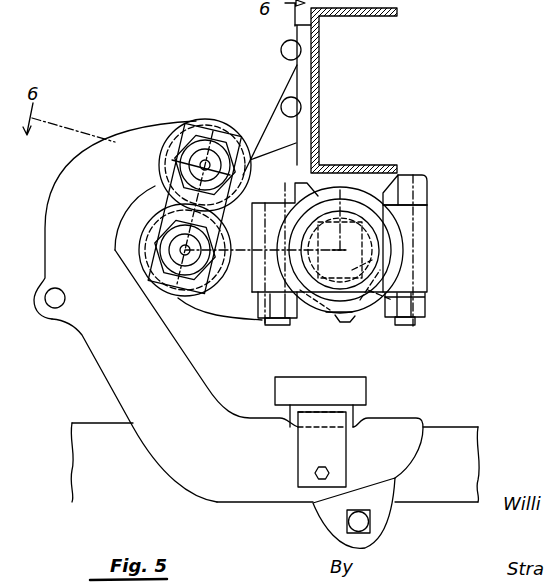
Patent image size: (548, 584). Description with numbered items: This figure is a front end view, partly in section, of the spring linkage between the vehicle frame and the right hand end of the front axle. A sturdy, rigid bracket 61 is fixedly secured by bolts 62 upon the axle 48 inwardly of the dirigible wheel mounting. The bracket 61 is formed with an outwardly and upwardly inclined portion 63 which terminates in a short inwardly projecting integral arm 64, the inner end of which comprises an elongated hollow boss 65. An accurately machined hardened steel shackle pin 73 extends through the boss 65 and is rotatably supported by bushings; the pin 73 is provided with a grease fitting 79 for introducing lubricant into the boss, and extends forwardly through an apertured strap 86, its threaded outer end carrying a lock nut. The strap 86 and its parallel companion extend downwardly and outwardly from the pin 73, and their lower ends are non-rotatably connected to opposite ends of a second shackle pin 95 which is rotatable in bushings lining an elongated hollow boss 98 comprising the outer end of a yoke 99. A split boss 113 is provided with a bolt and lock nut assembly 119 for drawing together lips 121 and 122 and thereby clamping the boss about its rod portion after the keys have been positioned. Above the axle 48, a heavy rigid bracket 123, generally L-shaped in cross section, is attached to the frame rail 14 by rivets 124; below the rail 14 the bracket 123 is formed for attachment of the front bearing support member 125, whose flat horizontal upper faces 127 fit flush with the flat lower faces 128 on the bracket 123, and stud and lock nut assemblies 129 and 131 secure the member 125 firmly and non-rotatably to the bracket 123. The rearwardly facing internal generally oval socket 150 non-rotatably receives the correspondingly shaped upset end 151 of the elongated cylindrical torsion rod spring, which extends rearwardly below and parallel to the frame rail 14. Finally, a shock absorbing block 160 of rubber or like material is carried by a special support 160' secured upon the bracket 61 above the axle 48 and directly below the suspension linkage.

The frame rail 14 is at (320, 83).
The axle 48 is at (478, 440).
The bracket 61 is at (163, 463).
The bolts 62 is at (371, 523).
The outwardly and upwardly inclined portion 63 is at (98, 343).
The arm 64 is at (150, 128).
The hollow boss 65 is at (218, 127).
The shackle pin 73 is at (226, 130).
The grease fitting 79 is at (180, 173).
The strap 86 is at (167, 205).
The second shackle pin 95 is at (200, 125).
The hollow boss 98 is at (148, 236).
The yoke 99 is at (240, 313).
The split boss 113 is at (425, 300).
The bolt and lock nut assembly 119 is at (353, 323).
The lip 121 is at (355, 308).
The lip 122 is at (428, 270).
The bracket 123 is at (311, 40).
The rivets 124 is at (286, 47).
The front bearing support member 125 is at (428, 243).
The flat horizontal upper faces 127 is at (408, 203).
The flat lower faces 128 is at (427, 211).
The stud and lock nut assembly 129 is at (280, 325).
The stud and lock nut assembly 131 is at (403, 324).
The oval socket 150 is at (316, 298).
The upset end 151 is at (322, 268).
The shock absorbing block 160 is at (343, 396).
The support 160' is at (352, 449).